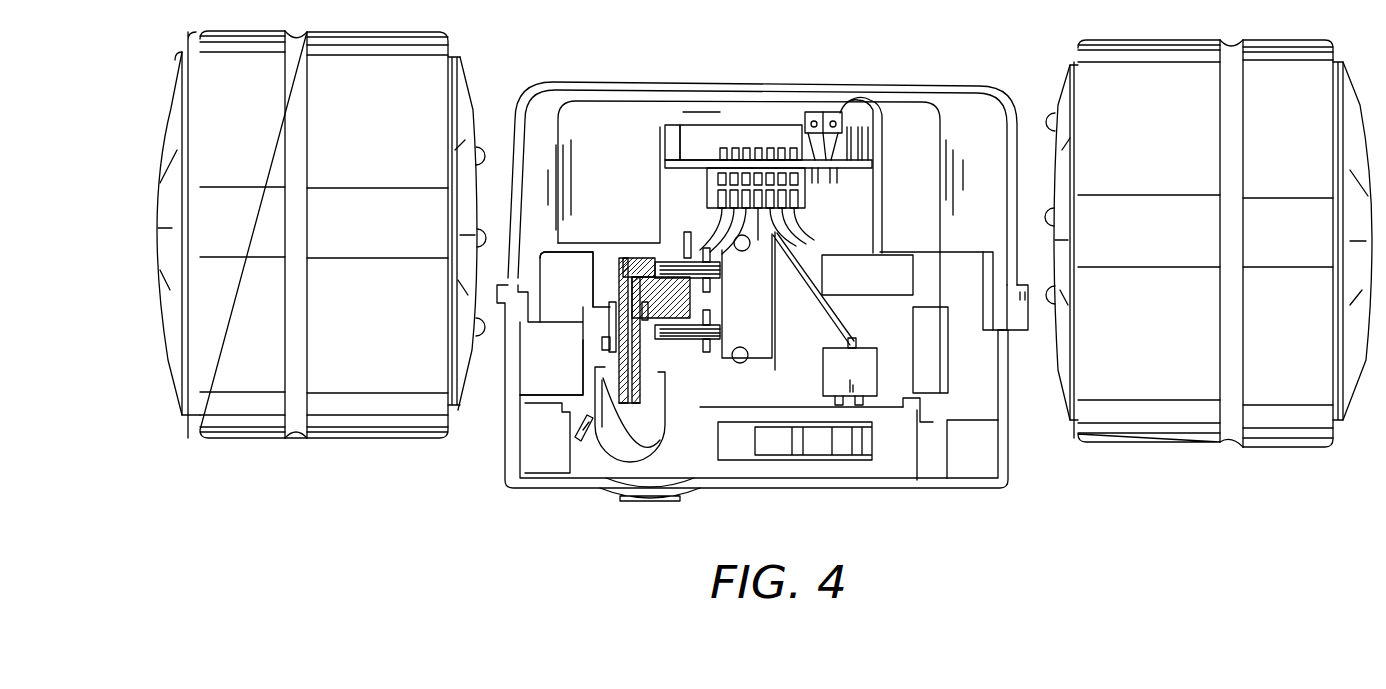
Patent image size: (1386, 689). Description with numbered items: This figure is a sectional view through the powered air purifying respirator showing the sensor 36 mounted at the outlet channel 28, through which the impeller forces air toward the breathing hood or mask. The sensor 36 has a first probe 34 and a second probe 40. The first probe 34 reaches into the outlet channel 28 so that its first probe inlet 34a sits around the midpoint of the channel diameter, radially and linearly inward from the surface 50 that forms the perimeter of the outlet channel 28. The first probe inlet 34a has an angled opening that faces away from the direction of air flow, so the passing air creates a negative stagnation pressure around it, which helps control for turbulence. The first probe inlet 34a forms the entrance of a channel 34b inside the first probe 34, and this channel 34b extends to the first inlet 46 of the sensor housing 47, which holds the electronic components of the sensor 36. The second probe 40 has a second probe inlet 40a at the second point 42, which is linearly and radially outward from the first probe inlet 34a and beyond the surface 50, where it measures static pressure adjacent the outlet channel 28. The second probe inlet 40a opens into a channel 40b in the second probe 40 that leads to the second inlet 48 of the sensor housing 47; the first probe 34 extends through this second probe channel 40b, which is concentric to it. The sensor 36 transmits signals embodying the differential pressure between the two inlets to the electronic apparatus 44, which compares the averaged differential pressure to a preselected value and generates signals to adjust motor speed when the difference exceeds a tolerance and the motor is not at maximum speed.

The outlet channel 28 is at (625, 427).
The first probe 34 is at (592, 380).
The first probe inlet 34a is at (640, 373).
The first probe channel 34b is at (626, 272).
The sensor 36 is at (632, 231).
The second probe 40 is at (610, 328).
The second probe inlet 40a is at (610, 352).
The second probe channel 40b is at (613, 305).
The second point 42 is at (645, 358).
The electronic apparatus 44 is at (768, 113).
The first inlet of sensor housing 46 is at (670, 257).
The sensor housing 47 is at (755, 306).
The second inlet of sensor housing 48 is at (718, 327).
The surface 50 is at (607, 380).